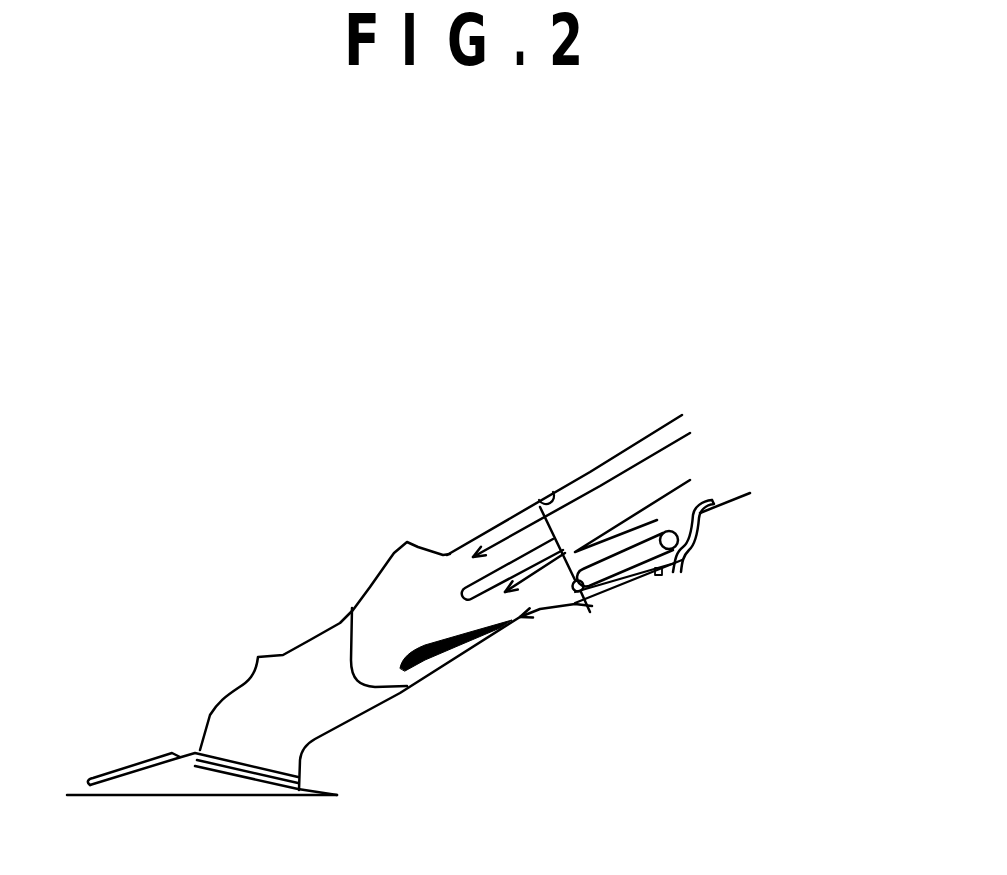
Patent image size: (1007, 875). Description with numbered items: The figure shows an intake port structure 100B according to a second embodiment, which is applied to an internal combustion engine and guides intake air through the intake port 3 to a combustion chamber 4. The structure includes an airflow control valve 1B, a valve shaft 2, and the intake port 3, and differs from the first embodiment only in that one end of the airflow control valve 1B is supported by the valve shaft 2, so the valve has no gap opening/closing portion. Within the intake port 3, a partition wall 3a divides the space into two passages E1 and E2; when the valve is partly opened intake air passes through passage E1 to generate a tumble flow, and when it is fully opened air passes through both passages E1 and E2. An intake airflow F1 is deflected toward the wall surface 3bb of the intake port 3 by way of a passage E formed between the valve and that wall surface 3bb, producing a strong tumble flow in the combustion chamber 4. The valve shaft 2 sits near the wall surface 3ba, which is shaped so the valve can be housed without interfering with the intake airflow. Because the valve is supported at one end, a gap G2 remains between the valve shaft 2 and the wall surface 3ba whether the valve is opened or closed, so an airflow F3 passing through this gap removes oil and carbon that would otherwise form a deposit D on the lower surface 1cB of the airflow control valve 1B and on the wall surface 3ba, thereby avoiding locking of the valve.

The intake port structure 100B is at (778, 446).
The airflow control valve 1B is at (610, 568).
The lower surface 1cB is at (581, 605).
The valve shaft 2 is at (675, 552).
The intake port 3 is at (367, 593).
The partition wall 3a is at (486, 598).
The wall surface 3ba is at (658, 578).
The wall surface 3bb is at (540, 507).
The combustion chamber 4 is at (142, 779).
The deposit D is at (423, 663).
The passage E is at (593, 520).
The passage E1 is at (512, 553).
The passage E2 is at (543, 588).
The intake airflow F1 is at (648, 456).
The airflow F3 is at (705, 512).
The gap G2 is at (633, 575).